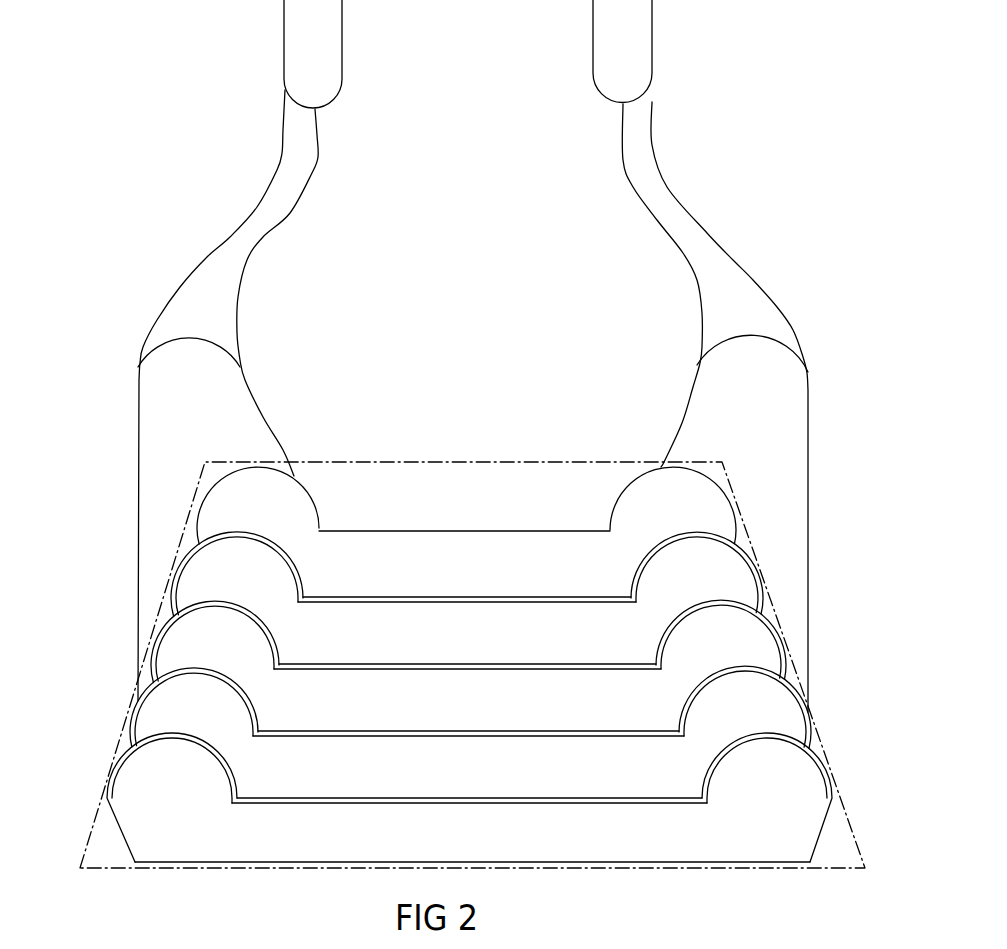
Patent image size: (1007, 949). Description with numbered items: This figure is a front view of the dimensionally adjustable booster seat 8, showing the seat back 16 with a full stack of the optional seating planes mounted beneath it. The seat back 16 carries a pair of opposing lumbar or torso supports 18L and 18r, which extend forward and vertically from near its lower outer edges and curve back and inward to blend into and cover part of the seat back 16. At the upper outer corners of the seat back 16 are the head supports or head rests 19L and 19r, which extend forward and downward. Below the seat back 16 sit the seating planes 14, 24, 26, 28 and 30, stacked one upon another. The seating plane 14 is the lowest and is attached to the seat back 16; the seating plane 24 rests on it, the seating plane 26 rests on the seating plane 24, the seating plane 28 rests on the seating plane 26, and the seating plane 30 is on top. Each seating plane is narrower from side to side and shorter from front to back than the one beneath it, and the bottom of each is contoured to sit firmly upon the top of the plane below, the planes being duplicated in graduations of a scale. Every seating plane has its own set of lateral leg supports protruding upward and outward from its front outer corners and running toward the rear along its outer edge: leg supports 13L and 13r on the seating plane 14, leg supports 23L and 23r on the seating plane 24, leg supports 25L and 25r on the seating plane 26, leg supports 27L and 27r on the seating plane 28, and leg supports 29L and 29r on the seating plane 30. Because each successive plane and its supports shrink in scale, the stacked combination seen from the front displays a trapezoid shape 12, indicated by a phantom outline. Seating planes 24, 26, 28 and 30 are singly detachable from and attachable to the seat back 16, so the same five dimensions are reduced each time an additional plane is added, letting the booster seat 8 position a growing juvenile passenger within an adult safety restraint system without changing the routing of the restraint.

The dimensionally adjustable booster seat 8 is at (735, 242).
The trapezoid shape 12 is at (857, 845).
The lateral leg support 13L is at (795, 790).
The lateral leg support 13r is at (198, 783).
The seating plane 14 is at (474, 845).
The seat back 16 is at (477, 252).
The torso support 18L is at (138, 440).
The torso support 18r is at (808, 461).
The head rest 19L is at (284, 44).
The head rest 19r is at (652, 40).
The lateral leg support 23L is at (770, 723).
The lateral leg support 23r is at (220, 707).
The seating plane 24 is at (470, 785).
The lateral leg support 25L is at (745, 648).
The lateral leg support 25r is at (240, 648).
The seating plane 26 is at (470, 718).
The lateral leg support 27L is at (720, 577).
The lateral leg support 27r is at (264, 580).
The seating plane 28 is at (466, 642).
The lateral leg support 29L is at (702, 515).
The lateral leg support 29r is at (282, 515).
The seating plane 30 is at (463, 581).